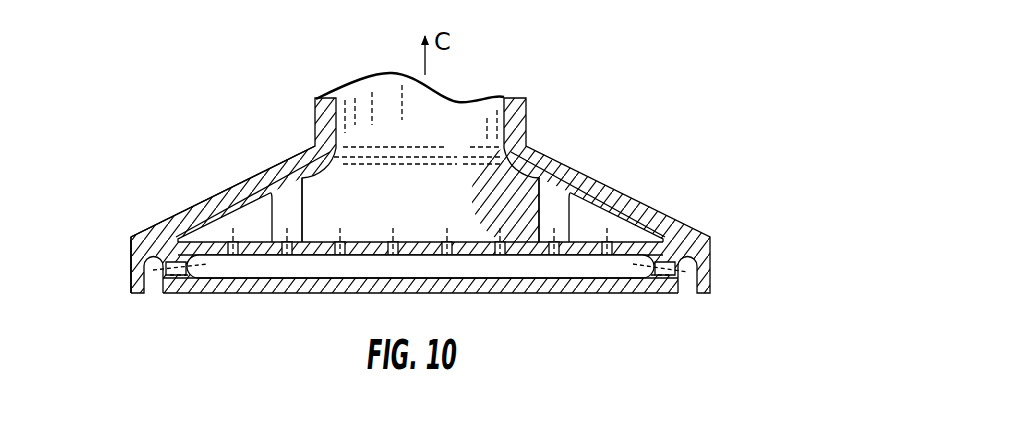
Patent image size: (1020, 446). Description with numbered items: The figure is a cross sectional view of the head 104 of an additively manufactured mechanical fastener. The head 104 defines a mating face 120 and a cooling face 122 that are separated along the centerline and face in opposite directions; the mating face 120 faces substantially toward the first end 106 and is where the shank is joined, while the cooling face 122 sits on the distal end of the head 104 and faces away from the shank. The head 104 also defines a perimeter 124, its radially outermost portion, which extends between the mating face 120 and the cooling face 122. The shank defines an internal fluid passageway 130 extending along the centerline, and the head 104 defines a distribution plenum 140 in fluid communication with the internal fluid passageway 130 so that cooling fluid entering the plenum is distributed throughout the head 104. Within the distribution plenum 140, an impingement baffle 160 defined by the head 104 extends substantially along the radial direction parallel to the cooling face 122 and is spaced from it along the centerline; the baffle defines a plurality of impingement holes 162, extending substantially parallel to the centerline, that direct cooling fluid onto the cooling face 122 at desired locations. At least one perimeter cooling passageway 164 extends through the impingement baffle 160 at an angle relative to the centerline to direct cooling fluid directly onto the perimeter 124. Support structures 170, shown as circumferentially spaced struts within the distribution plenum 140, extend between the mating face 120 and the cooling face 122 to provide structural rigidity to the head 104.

The head 104 is at (131, 169).
The first end 106 is at (550, 126).
The mating face 120 is at (220, 190).
The cooling face 122 is at (284, 298).
The perimeter 124 is at (130, 253).
The internal fluid passageway 130 is at (436, 121).
The distribution plenum 140 is at (433, 209).
The impingement baffle 160 is at (637, 244).
The impingement holes 162 is at (601, 240).
The perimeter cooling passageway 164 is at (163, 279).
The support structures 170 is at (291, 205).